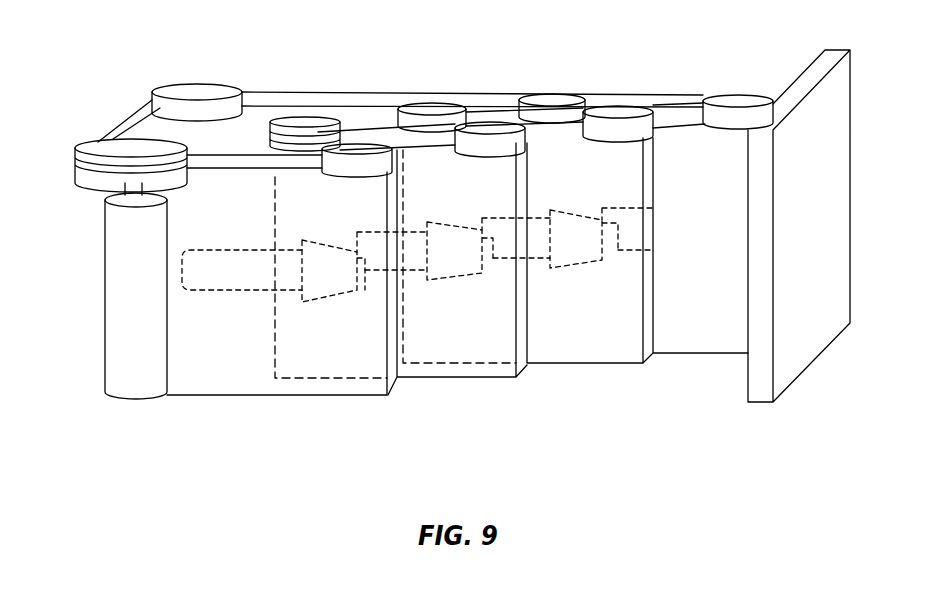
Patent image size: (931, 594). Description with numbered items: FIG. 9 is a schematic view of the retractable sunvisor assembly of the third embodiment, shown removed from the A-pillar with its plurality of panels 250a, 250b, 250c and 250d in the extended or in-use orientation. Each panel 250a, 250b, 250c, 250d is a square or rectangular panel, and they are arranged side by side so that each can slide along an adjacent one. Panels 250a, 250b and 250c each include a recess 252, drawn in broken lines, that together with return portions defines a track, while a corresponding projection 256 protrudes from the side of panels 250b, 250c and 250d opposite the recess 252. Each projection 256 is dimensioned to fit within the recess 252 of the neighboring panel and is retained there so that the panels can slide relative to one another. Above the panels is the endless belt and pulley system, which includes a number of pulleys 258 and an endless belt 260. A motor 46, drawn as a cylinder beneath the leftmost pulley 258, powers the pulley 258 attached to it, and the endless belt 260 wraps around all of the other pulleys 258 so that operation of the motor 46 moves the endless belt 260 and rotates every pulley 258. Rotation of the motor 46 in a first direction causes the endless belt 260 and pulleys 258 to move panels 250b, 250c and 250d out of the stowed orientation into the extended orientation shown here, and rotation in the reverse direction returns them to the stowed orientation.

The motor 46 is at (118, 343).
The panel 250a is at (195, 383).
The panel 250b is at (435, 380).
The panel 250c is at (578, 362).
The panel 250d is at (697, 360).
The recess 252 is at (212, 290).
The projection 256 is at (310, 302).
The pulley 258 is at (188, 98).
The endless belt 260 is at (220, 168).